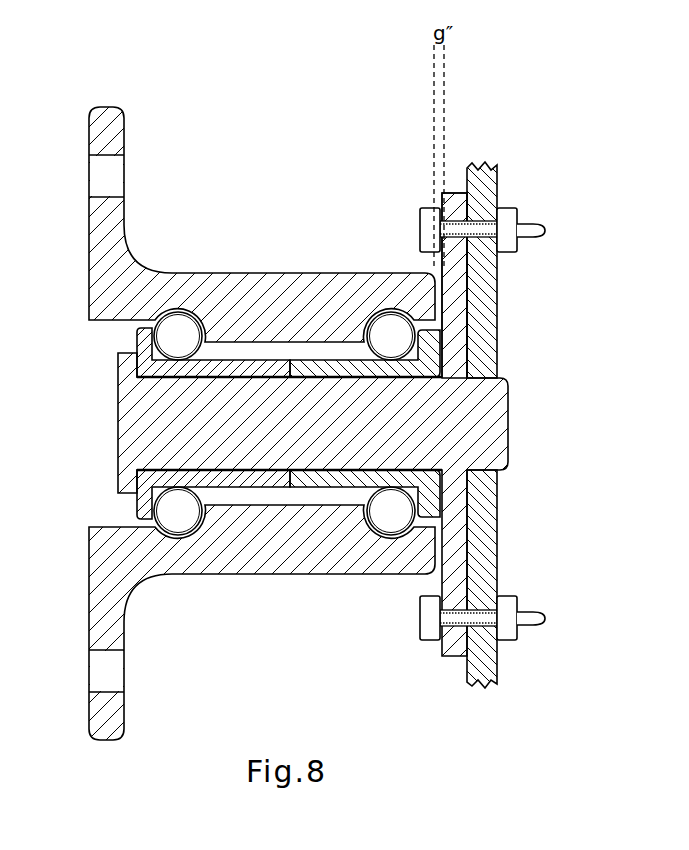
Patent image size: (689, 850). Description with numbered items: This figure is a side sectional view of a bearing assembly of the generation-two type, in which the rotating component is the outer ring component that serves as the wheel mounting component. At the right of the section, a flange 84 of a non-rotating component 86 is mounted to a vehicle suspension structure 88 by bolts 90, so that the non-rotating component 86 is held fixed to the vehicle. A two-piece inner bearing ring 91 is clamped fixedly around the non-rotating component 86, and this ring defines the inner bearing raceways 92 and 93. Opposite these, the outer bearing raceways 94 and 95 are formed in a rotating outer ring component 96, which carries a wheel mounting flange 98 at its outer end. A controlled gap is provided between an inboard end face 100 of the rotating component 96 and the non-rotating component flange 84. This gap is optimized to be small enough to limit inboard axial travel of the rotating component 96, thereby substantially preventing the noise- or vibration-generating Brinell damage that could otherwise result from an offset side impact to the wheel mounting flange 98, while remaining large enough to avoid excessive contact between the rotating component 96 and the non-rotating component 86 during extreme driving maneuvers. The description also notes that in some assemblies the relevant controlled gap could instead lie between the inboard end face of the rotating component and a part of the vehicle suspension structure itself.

The flange 84 is at (450, 197).
The non-rotating component 86 is at (490, 425).
The vehicle suspension structure 88 is at (488, 178).
The bolts 90 is at (428, 625).
The two-piece inner bearing ring 91 is at (297, 548).
The inner bearing raceway 92 is at (420, 493).
The inner bearing raceway 93 is at (160, 495).
The outer bearing raceway 94 is at (390, 543).
The outer bearing raceway 95 is at (178, 540).
The rotating outer ring component 96 is at (298, 562).
The wheel mounting flange 98 is at (103, 722).
The inboard end face 100 is at (432, 299).